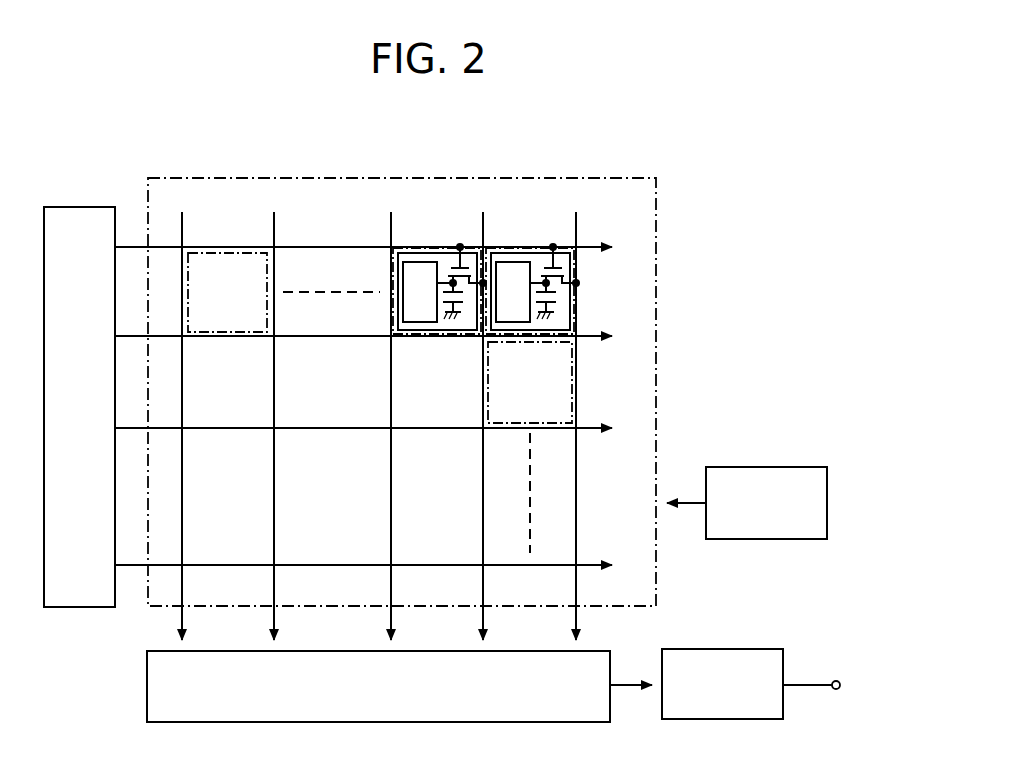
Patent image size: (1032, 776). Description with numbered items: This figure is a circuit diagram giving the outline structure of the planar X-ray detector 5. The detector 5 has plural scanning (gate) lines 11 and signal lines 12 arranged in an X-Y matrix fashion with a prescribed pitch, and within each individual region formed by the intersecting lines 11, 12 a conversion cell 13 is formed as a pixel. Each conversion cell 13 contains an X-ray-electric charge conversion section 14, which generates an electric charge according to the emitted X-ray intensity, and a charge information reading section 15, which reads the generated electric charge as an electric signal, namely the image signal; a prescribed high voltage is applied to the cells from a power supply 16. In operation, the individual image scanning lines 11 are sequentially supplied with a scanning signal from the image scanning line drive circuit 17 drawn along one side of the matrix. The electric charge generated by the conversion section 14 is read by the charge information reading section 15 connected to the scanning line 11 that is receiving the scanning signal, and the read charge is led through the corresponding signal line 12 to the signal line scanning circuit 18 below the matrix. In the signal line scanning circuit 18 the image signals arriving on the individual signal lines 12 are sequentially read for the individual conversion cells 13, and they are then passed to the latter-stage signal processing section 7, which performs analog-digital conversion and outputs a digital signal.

The planar X-ray detector 5 is at (552, 157).
The signal processing section 7 is at (751, 648).
The scanning line 11 is at (323, 246).
The signal line 12 is at (580, 300).
The conversion cell 13 is at (224, 252).
The X-ray-electric charge conversion section 14 is at (415, 323).
The charge information reading section 15 is at (453, 320).
The power supply 16 is at (762, 466).
The image scanning line drive circuit 17 is at (77, 206).
The signal line scanning circuit 18 is at (147, 683).